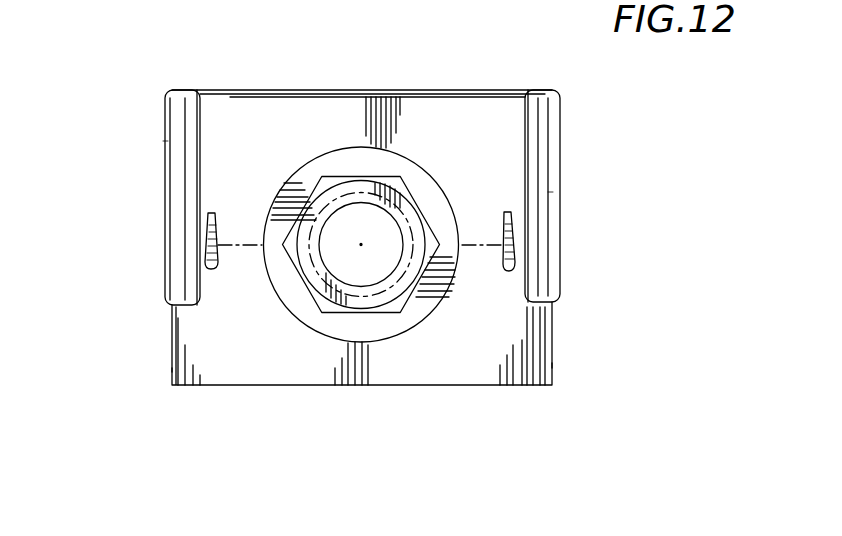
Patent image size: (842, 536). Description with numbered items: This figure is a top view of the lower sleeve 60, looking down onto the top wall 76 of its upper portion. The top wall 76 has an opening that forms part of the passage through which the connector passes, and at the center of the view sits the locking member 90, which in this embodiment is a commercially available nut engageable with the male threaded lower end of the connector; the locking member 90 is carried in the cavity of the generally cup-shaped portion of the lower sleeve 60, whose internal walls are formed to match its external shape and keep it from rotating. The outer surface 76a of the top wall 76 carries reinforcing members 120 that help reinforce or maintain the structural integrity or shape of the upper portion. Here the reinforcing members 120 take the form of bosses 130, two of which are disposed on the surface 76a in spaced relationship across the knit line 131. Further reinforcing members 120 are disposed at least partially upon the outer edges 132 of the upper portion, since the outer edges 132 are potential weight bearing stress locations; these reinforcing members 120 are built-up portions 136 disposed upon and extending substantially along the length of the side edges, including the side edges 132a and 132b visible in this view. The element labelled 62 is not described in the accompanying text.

The lower sleeve 60 is at (88, 298).
The plate 62 is at (253, 360).
The top wall 76 is at (291, 112).
The outer surface 76a is at (465, 112).
The locking member 90 is at (393, 305).
The reinforcing members 120 is at (181, 90).
The bosses 130 is at (207, 224).
The knit line 131 is at (242, 239).
The outer edges 132 is at (399, 110).
The side edge 132a is at (168, 368).
The side edge 132b is at (552, 365).
The built-up portions 136 is at (163, 141).